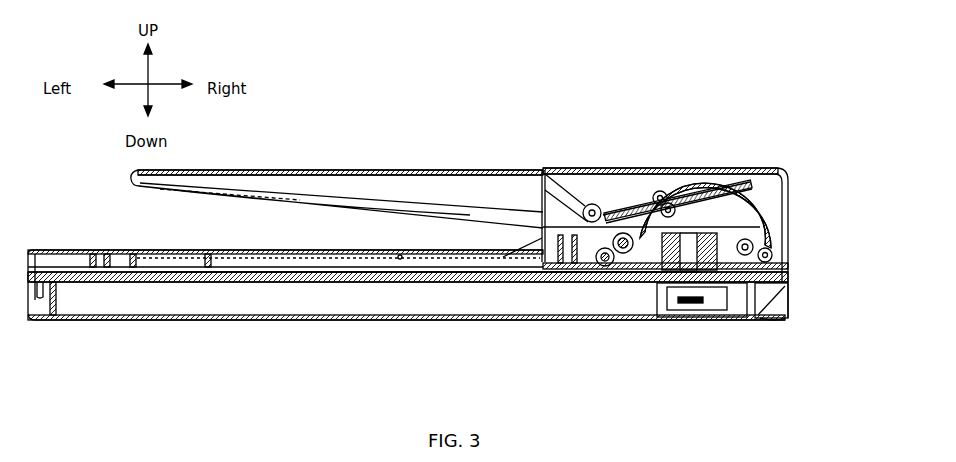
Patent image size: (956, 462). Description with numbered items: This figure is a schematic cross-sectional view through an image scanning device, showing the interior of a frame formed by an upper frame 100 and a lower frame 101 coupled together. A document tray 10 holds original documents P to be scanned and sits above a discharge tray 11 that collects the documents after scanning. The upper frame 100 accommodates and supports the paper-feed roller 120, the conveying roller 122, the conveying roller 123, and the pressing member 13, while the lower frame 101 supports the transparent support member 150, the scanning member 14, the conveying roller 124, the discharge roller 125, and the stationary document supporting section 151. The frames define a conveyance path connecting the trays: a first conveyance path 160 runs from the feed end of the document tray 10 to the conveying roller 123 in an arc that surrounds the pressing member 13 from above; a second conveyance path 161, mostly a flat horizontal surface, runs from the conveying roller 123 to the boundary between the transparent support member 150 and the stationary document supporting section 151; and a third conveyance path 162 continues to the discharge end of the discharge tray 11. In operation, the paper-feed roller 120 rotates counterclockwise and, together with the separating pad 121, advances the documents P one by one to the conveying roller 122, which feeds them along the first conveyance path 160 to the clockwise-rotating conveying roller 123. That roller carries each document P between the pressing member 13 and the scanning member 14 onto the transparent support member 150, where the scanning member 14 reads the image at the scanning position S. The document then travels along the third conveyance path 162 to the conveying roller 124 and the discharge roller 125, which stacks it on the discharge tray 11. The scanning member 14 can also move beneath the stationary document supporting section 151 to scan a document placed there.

The document tray 10 is at (317, 190).
The discharge tray 11 is at (250, 262).
The original document P is at (400, 257).
The upper frame 100 is at (555, 178).
The lower frame 101 is at (215, 318).
The paper-feed roller 120 is at (592, 203).
The separating pad 121 is at (607, 217).
The conveying roller 122 is at (660, 190).
The conveying roller 123 is at (783, 225).
The conveying roller 124 is at (595, 282).
The discharge roller 125 is at (503, 280).
The pressing member 13 is at (792, 283).
The scanning member 14 is at (683, 305).
The transparent support member 150 is at (765, 322).
The stationary document supporting section 151 is at (300, 283).
The first conveyance path 160 is at (775, 168).
The second conveyance path 161 is at (778, 253).
The third conveyance path 162 is at (660, 278).
The scanning position S is at (717, 283).